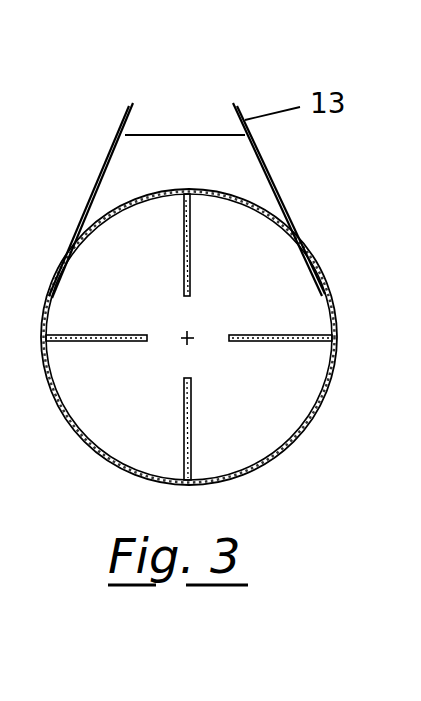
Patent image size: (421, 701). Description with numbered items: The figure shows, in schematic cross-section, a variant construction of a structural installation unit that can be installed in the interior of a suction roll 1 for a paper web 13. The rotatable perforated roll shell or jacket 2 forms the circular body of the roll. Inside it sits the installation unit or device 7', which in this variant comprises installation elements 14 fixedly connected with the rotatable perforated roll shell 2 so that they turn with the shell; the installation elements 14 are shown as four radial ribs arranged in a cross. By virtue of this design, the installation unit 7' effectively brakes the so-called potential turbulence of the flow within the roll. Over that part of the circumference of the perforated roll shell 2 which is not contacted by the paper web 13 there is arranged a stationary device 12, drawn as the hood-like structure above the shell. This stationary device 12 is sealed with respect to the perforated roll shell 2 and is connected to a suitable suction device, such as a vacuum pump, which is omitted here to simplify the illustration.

The feed pipe / tube assembly 1 is at (66, 441).
The perforated roll shell or jacket 2 is at (307, 427).
The installation unit or device 7' is at (74, 278).
The stationary device 12 is at (240, 168).
The paper web 13 is at (127, 120).
The installation elements 14 is at (266, 335).